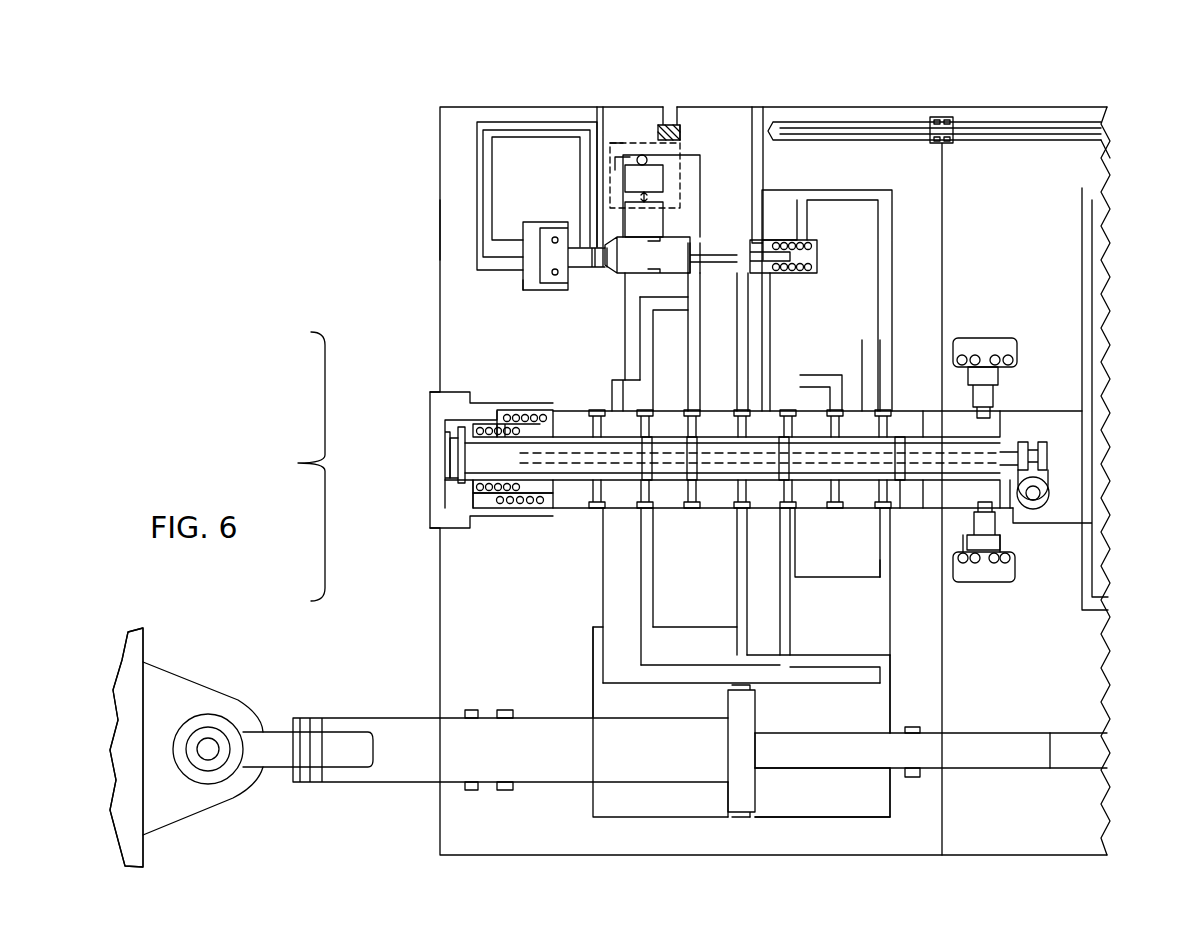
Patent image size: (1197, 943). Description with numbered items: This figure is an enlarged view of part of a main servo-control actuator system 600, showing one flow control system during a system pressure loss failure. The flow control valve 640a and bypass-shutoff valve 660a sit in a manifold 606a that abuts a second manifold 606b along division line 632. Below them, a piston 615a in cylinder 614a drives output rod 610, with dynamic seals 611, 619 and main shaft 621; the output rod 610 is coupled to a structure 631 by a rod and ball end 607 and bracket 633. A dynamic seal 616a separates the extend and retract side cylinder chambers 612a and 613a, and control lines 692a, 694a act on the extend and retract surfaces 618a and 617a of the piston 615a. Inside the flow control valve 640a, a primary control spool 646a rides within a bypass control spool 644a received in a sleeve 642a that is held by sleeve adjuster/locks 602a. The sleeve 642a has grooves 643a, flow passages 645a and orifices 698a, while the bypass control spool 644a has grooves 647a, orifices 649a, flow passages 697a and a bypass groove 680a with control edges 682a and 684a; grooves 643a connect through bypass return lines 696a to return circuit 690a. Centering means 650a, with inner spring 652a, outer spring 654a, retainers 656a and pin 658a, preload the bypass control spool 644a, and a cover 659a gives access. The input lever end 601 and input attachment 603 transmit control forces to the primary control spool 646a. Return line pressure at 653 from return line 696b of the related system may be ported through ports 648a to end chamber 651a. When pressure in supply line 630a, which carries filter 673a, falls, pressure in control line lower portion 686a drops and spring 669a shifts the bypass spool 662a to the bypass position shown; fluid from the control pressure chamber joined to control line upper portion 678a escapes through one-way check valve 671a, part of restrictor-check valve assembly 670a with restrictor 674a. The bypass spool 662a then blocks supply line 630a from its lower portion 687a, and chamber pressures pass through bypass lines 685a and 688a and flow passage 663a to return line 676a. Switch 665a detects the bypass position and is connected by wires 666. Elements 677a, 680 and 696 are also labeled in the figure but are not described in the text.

The main servo-control actuator system 600 is at (275, 235).
The input lever end 601 is at (1048, 455).
The sleeve adjuster/lock 602a is at (1010, 580).
The input attachment 603 is at (1050, 490).
The manifold 606a is at (440, 222).
The second manifold 606b is at (1107, 158).
The rod and ball end 607 is at (238, 728).
The output rod 610 is at (358, 718).
The dynamic seal 611 is at (505, 792).
The extend side cylinder chamber 612a is at (868, 820).
The retract side cylinder chamber 613a is at (608, 800).
The cylinder 614a is at (845, 849).
The piston 615a is at (740, 775).
The dynamic seal 616a is at (742, 820).
The retract surface of piston 617a is at (728, 800).
The extend surface of piston 618a is at (758, 800).
The dynamic seal 619 is at (915, 778).
The main shaft 621 is at (1060, 770).
The supply line 630a is at (677, 116).
The structure 631 is at (145, 635).
The division line 632 is at (948, 178).
The bracket 633 is at (205, 675).
The flow control valve 640a is at (656, 466).
The sleeve 642a is at (985, 560).
The grooves 643a is at (742, 510).
The bypass control spool 644a is at (902, 505).
The flow passages 645a is at (790, 565).
The primary control spool 646a is at (640, 570).
The grooves 647a is at (880, 408).
The ports 648a is at (1012, 508).
The orifices 649a is at (708, 487).
The centering means 650a is at (480, 503).
The end chamber 651a is at (460, 450).
The inner spring 652a is at (478, 494).
The return line pressure 653 is at (1042, 430).
The outer spring 654a is at (495, 508).
The retainers 656a is at (478, 487).
The pin 658a is at (455, 460).
The cover 659a is at (432, 405).
The bypass-shutoff valve 660a is at (718, 232).
The bypass spool 662a is at (608, 248).
The flow passage 663a is at (705, 256).
The switch 665a is at (523, 280).
The lines or wires 666 is at (1012, 130).
The spring 669a is at (812, 250).
The restrictor-check valve assembly 670a is at (597, 133).
The one-way check valve 671a is at (612, 145).
The filter 673a is at (660, 128).
The restrictor means 674a is at (625, 186).
The return line 676a is at (757, 118).
The solenoid enclosure 677a is at (603, 120).
The control line upper portion 678a is at (615, 162).
The passage 680 is at (882, 410).
The bypass groove 680a is at (837, 542).
The control edge 682a is at (748, 570).
The control edge 684a is at (878, 578).
The bypass line 685a is at (632, 312).
The control line lower portion 686a is at (748, 350).
The supply line lower portion 687a is at (645, 368).
The bypass line 688a is at (770, 297).
The return circuit 690a is at (890, 600).
The control line 692a is at (600, 660).
The control line 694a is at (748, 632).
The passage 696 is at (600, 578).
The bypass return lines 696a is at (737, 585).
The return line 696b is at (1090, 568).
The flow passages 697a is at (569, 390).
The orifices 698a is at (850, 408).